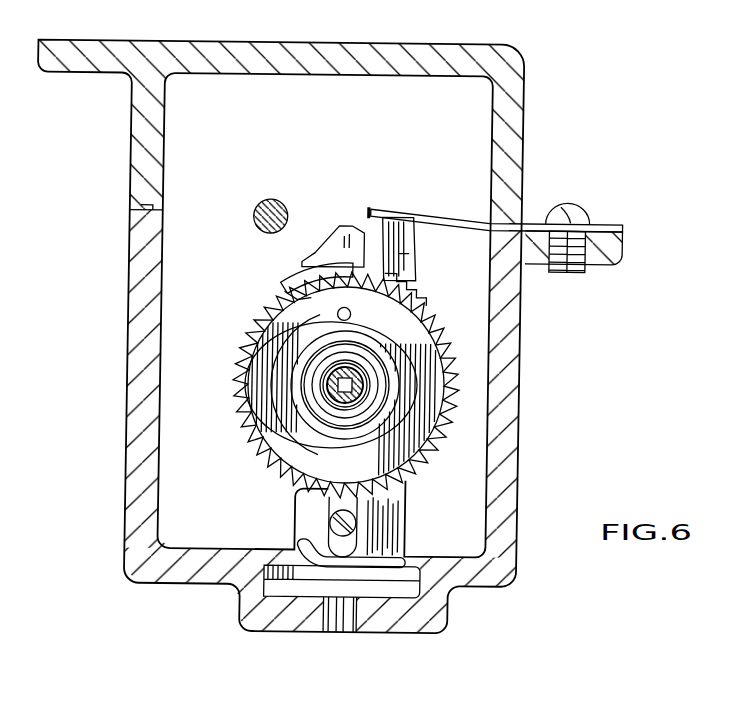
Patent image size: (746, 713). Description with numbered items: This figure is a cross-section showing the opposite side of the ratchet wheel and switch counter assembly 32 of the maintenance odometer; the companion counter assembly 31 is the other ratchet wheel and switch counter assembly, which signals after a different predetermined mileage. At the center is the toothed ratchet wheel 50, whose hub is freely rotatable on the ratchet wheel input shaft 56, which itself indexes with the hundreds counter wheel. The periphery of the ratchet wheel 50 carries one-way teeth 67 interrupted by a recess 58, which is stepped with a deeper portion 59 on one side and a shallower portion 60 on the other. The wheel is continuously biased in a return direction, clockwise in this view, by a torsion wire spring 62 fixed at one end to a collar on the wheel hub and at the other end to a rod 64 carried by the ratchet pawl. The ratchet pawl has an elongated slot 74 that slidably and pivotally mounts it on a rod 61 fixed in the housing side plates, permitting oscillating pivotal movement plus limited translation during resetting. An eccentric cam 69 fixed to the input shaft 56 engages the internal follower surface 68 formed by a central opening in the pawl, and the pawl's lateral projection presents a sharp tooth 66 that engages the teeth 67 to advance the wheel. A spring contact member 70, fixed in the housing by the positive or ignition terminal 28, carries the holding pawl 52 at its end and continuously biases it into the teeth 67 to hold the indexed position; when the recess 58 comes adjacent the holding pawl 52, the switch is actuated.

The terminal 28 is at (575, 212).
The ratchet wheel and switch counter assembly 31 is at (380, 400).
The ratchet wheel and switch counter assembly 32 is at (350, 216).
The ratchet wheel 50 is at (244, 334).
The holding pawl 52 is at (398, 256).
The ratchet wheel input shaft 56 is at (370, 372).
The recess 58 is at (296, 287).
The deeper portion 59 is at (352, 297).
The shallower portion 60 is at (284, 288).
The rod 61 is at (355, 523).
The torsion wire spring 62 is at (385, 347).
The rod 64 is at (290, 296).
The sharp tooth 66 is at (358, 252).
The one-way teeth 67 is at (240, 438).
The internal follower surface 68 is at (283, 462).
The eccentric cam 69 is at (283, 372).
The spring contact member 70 is at (438, 210).
The elongated slot 74 is at (346, 550).